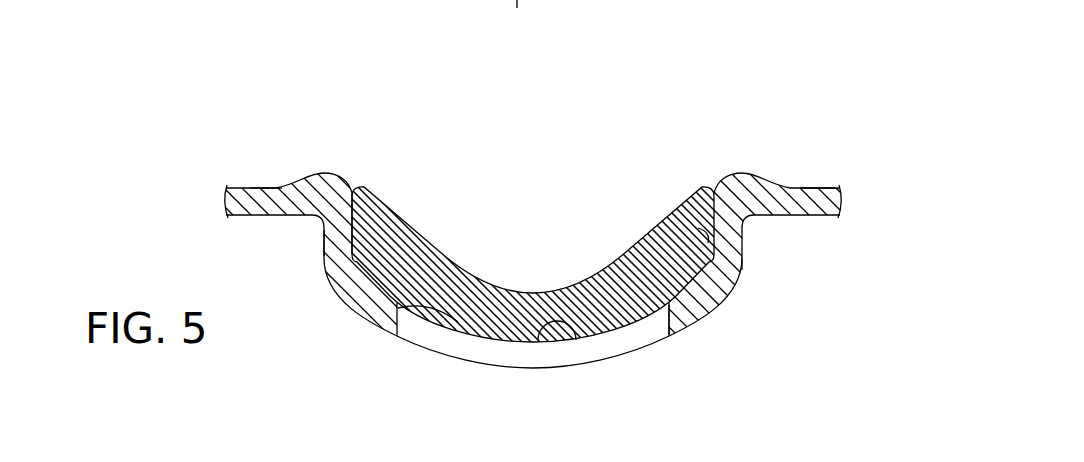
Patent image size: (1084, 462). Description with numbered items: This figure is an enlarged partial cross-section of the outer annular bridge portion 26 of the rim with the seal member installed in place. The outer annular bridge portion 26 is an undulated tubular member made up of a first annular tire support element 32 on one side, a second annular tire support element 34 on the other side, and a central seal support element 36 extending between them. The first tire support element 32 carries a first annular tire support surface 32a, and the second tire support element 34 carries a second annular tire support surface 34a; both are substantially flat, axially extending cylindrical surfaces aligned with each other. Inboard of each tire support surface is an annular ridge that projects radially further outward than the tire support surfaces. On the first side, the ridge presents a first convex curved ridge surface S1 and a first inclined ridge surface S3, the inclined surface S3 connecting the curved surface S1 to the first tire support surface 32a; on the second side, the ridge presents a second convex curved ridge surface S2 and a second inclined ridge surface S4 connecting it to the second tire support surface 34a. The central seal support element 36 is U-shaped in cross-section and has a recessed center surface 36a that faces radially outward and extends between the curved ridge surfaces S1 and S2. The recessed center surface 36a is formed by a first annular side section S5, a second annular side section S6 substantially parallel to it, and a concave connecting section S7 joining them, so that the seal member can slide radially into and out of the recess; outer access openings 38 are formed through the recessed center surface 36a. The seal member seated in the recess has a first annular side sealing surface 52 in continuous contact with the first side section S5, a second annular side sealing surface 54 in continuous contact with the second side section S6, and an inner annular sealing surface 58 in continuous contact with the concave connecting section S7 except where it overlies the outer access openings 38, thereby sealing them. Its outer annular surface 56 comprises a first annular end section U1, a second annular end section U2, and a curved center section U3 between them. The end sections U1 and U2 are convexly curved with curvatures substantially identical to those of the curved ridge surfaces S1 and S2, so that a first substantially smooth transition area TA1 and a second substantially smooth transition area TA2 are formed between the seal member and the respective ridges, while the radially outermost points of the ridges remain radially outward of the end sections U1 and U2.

The outer annular bridge portion 26 is at (748, 274).
The first annular tire support element 32 is at (809, 217).
The first annular tire support surface 32a is at (829, 186).
The second annular tire support element 34 is at (236, 218).
The second annular tire support surface 34a is at (265, 186).
The central seal support element 36 is at (716, 292).
The recessed center surface 36a is at (433, 312).
The outer access openings 38 is at (668, 318).
The first annular side sealing surface 52 is at (747, 277).
The second annular side sealing surface 54 is at (338, 290).
The outer annular surface 56 is at (662, 132).
The inner annular sealing surface 58 is at (462, 333).
The first convex curved ridge surface S1 is at (746, 167).
The second convex curved ridge surface S2 is at (320, 167).
The first inclined ridge surface S3 is at (746, 167).
The second inclined ridge surface S4 is at (320, 167).
The first annular side section S5 is at (714, 249).
The second annular side section S6 is at (360, 269).
The concave connecting section S7 is at (578, 343).
The first annular end section U1 is at (639, 222).
The second annular end section U2 is at (427, 222).
The curved center section U3 is at (632, 219).
The first substantially smooth transition area TA1 is at (695, 116).
The second substantially smooth transition area TA2 is at (390, 128).